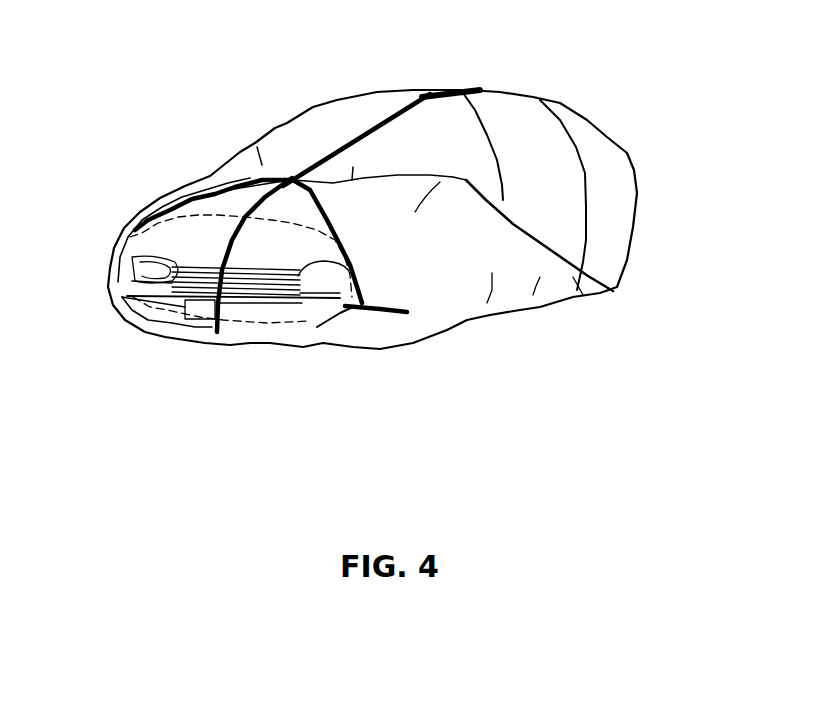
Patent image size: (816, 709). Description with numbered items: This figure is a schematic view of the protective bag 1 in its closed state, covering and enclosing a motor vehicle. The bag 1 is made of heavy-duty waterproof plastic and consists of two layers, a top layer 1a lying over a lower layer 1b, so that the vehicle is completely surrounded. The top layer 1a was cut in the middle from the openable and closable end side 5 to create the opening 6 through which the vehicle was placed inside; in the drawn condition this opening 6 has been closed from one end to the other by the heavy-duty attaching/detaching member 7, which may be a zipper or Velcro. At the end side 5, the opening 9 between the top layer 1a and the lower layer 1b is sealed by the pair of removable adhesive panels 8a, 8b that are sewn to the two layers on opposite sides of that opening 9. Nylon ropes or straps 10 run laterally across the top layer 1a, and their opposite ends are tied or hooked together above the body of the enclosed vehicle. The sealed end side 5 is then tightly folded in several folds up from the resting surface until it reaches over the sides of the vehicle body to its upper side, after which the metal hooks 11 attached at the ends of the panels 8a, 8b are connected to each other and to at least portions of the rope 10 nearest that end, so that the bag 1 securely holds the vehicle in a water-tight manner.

The protective bag 1 is at (433, 235).
The top layer 1a is at (607, 240).
The lower layer 1b is at (438, 293).
The openable and closable end side 5 is at (156, 187).
The opening 9 is at (156, 187).
The removable adhesive panel 8a is at (156, 187).
The removable adhesive panel 8b is at (215, 193).
The opening 6 is at (386, 110).
The attaching/detaching member 7 is at (383, 117).
The ropes or straps 10 is at (511, 121).
The metal hook 11 is at (317, 302).